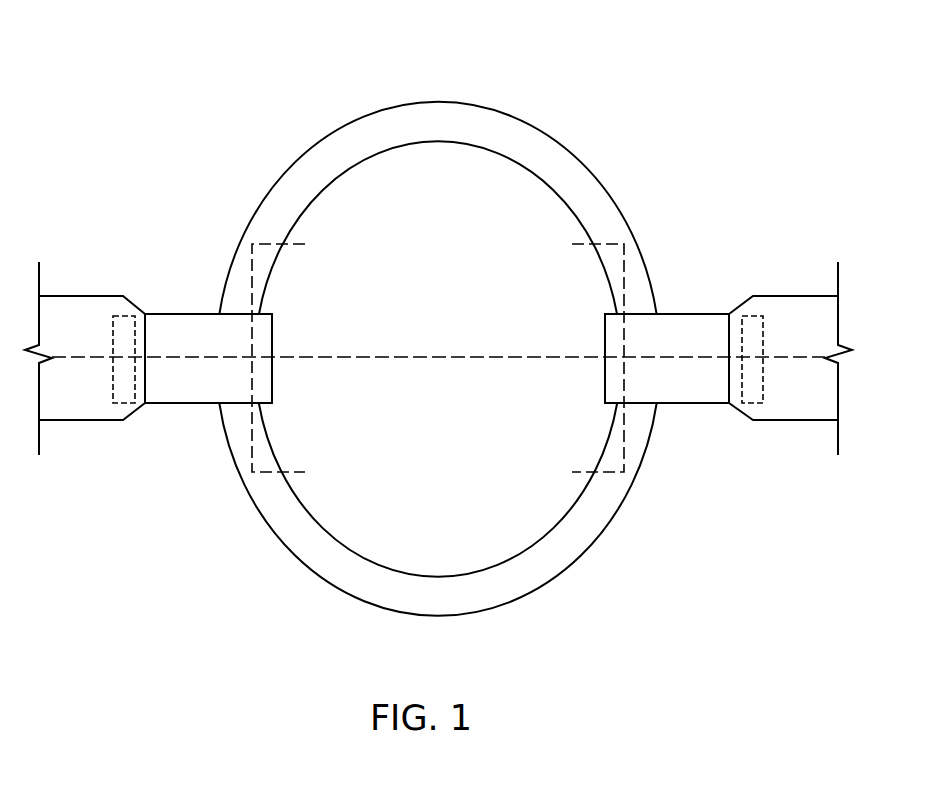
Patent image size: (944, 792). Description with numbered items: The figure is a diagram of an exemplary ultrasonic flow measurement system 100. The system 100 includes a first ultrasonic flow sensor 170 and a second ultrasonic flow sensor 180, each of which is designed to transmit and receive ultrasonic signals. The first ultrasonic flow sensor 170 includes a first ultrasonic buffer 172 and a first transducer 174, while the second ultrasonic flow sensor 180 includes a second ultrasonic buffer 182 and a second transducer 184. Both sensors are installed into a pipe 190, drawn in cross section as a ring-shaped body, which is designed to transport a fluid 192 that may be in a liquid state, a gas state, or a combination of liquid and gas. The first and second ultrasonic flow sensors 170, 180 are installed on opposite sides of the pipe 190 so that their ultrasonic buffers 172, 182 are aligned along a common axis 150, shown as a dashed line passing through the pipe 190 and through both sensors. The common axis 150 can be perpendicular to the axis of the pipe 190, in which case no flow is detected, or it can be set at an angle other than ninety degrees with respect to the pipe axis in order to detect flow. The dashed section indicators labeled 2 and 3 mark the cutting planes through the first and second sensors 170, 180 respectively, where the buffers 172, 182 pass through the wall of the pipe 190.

The ultrasonic flow measurement system 100 is at (243, 70).
The common axis 150 is at (470, 358).
The first ultrasonic flow sensor 170 is at (97, 282).
The first ultrasonic buffer 172 is at (163, 380).
The first transducer 174 is at (123, 328).
The second ultrasonic flow sensor 180 is at (797, 270).
The second ultrasonic buffer 182 is at (715, 380).
The second transducer 184 is at (757, 325).
The pipe 190 is at (440, 117).
The fluid 192 is at (423, 263).
The section line 2- 2 is at (290, 360).
The section line 3- 3 is at (586, 360).